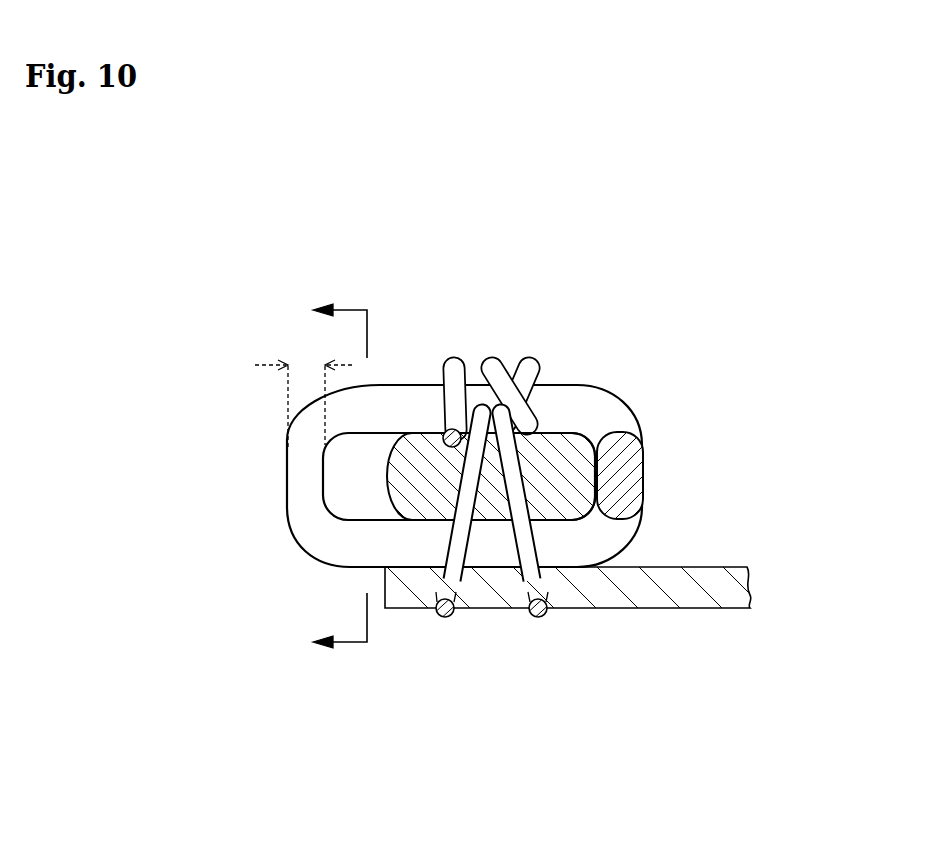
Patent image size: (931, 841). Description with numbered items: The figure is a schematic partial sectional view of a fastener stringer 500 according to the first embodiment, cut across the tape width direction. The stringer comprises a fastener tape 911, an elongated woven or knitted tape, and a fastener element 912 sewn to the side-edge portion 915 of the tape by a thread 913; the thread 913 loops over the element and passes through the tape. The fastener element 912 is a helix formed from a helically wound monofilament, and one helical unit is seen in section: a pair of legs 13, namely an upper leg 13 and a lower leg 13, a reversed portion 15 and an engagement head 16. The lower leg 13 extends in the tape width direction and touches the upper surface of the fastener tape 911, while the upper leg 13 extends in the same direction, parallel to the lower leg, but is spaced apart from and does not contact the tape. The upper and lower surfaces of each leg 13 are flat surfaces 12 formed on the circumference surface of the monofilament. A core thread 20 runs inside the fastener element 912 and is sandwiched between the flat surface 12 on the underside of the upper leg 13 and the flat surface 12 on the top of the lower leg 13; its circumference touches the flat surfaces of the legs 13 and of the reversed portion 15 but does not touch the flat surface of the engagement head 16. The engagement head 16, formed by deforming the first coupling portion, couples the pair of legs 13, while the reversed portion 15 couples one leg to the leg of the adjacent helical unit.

The fastener stringer 500 is at (150, 194).
The fastener tape 911 is at (698, 567).
The fastener element 912 is at (632, 373).
The thread 913 is at (498, 383).
The side-edge portion 915 is at (480, 598).
The flat surface 12 is at (440, 417).
The leg 13 is at (583, 427).
The reversed portion 15 is at (635, 492).
The engagement head 16 is at (310, 467).
The core thread 20 is at (438, 497).